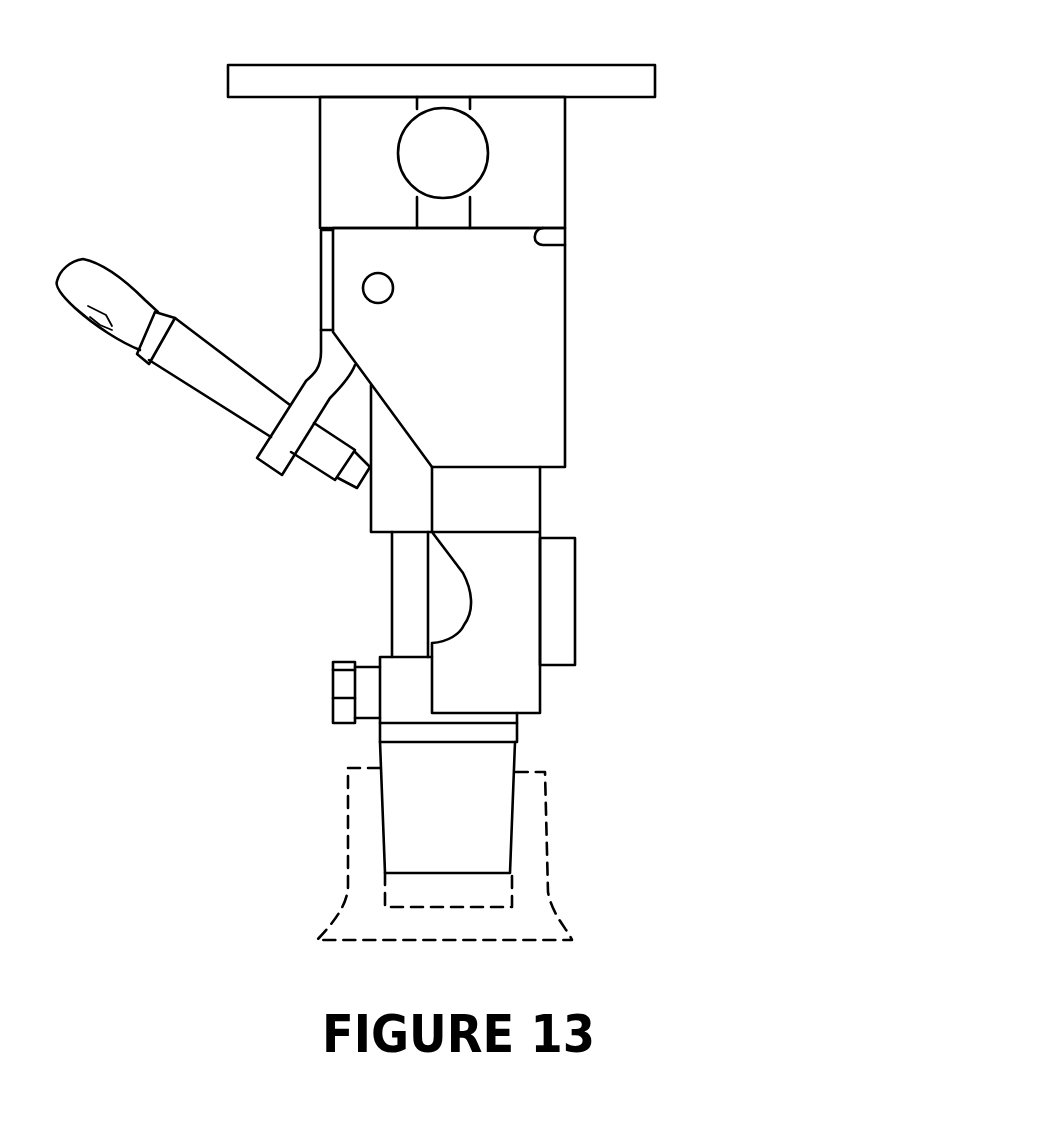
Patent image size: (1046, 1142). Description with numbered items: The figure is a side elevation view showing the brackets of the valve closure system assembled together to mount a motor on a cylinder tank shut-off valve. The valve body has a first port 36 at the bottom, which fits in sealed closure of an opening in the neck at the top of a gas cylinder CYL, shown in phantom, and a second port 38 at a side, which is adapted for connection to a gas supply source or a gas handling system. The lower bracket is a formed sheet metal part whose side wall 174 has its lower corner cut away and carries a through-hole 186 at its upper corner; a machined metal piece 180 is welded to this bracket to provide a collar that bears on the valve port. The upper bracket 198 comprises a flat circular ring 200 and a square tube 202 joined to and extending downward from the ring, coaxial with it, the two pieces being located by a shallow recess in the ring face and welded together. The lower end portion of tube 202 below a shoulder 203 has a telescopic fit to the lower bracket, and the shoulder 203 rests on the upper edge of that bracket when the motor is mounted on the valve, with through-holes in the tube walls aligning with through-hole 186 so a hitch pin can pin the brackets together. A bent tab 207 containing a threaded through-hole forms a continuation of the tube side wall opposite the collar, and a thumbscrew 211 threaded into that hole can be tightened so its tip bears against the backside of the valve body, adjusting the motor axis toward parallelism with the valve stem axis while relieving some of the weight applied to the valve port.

The bracket 198 is at (494, 59).
The flat circular ring 200 is at (640, 84).
The square tube 202 is at (550, 168).
The shoulder 203 is at (565, 240).
The through-hole 186 is at (382, 292).
The side wall 174 is at (533, 385).
The thumbscrew 211 is at (215, 387).
The bent tab 207 is at (278, 458).
The piece 180 is at (542, 537).
The second port 38 is at (560, 667).
The first port 36 is at (513, 837).
The gas cylinder CYL is at (545, 890).